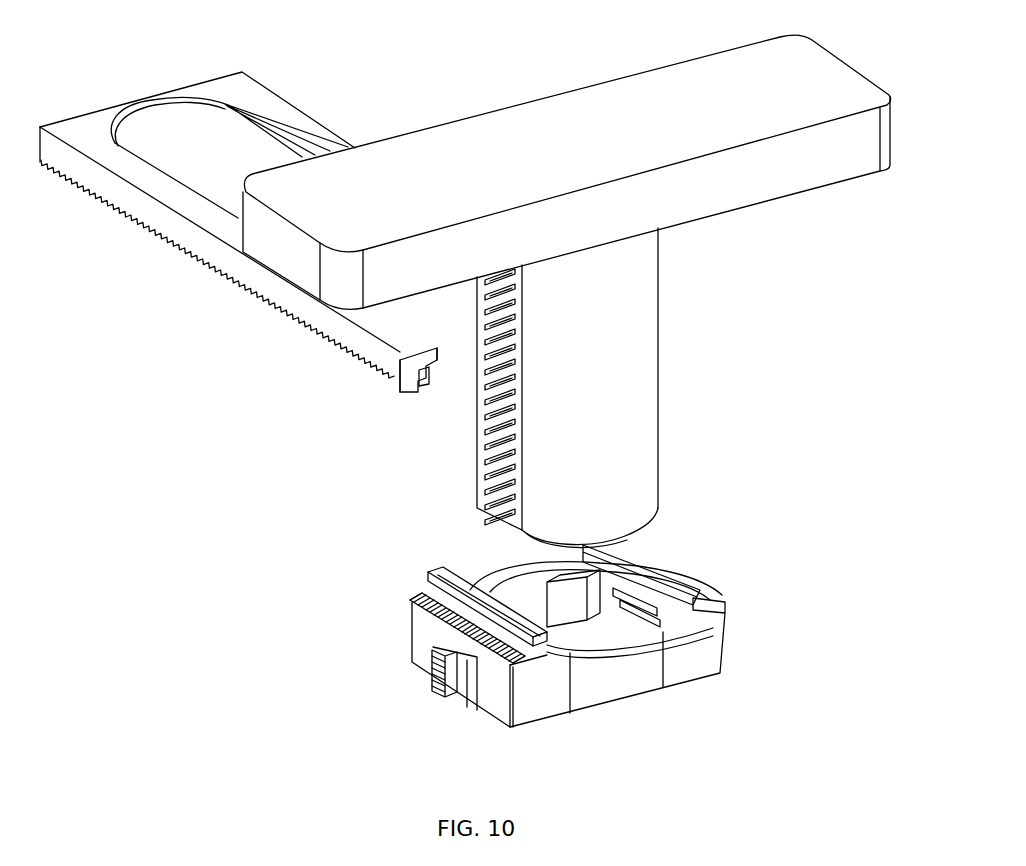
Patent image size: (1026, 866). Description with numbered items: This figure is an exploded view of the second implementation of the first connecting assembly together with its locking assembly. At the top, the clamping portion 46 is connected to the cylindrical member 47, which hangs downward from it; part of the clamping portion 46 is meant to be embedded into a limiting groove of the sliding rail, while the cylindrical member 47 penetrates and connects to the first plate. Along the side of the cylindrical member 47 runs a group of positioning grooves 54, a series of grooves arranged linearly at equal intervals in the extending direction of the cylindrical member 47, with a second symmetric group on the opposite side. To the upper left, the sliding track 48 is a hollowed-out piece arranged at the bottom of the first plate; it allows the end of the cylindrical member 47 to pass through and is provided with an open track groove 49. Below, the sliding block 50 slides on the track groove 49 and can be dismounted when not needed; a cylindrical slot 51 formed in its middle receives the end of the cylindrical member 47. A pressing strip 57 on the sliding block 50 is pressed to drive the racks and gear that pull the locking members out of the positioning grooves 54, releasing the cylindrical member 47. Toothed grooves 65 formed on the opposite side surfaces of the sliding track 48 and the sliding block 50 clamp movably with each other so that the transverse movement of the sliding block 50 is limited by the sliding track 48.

The clamping portion 46 is at (742, 180).
The cylindrical member 47 is at (645, 387).
The sliding track 48 is at (254, 82).
The track groove 49 is at (420, 380).
The sliding block 50 is at (723, 672).
The cylindrical slot 51 is at (580, 637).
The positioning grooves 54 is at (484, 470).
The pressing strip 57 is at (440, 695).
The toothed grooves 65 is at (280, 313).